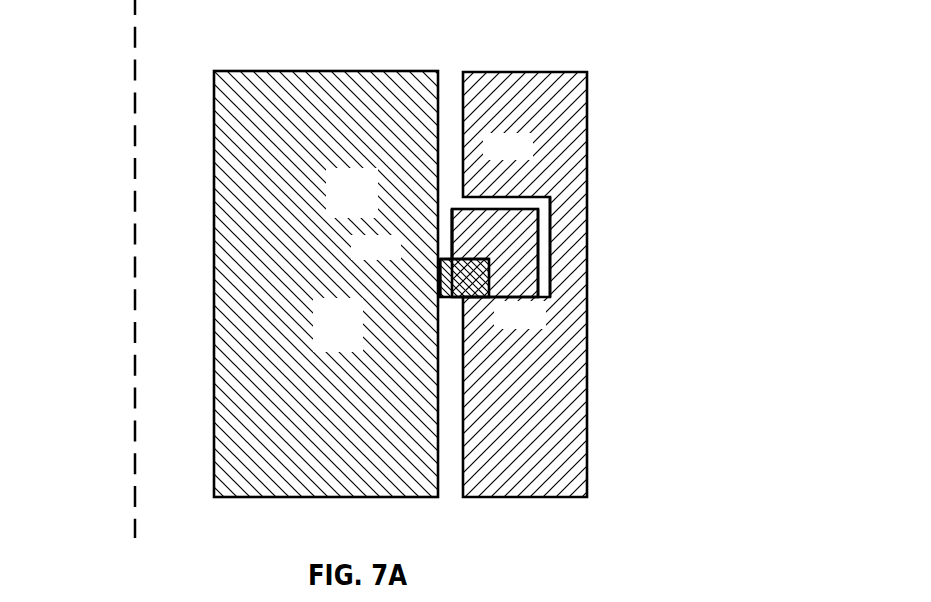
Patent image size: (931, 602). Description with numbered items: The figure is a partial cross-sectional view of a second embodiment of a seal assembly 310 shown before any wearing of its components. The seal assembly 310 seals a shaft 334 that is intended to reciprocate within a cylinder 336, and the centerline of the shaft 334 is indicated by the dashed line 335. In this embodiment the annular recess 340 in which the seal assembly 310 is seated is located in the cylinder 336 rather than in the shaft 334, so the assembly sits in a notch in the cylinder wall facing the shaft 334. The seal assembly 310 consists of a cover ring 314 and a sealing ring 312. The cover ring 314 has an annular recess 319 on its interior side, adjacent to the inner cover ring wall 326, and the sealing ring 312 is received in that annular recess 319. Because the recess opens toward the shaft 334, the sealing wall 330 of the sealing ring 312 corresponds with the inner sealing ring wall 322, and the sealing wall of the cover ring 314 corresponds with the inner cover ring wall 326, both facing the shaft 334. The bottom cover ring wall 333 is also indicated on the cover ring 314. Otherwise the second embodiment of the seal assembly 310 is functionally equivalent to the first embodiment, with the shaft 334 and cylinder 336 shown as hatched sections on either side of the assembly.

The seal assembly 310 is at (489, 206).
The sealing ring 312 is at (475, 298).
The cover ring 314 is at (539, 253).
The annular recess 319 is at (467, 259).
The inner sealing ring wall 322 is at (438, 276).
The inner cover ring wall 326 is at (450, 220).
The sealing wall 330 is at (438, 292).
The bottom cover ring wall 333 is at (450, 234).
The shaft 334 is at (272, 81).
The center axis 335 is at (134, 68).
The cylinder 336 is at (575, 94).
The annular recess 340 is at (549, 219).